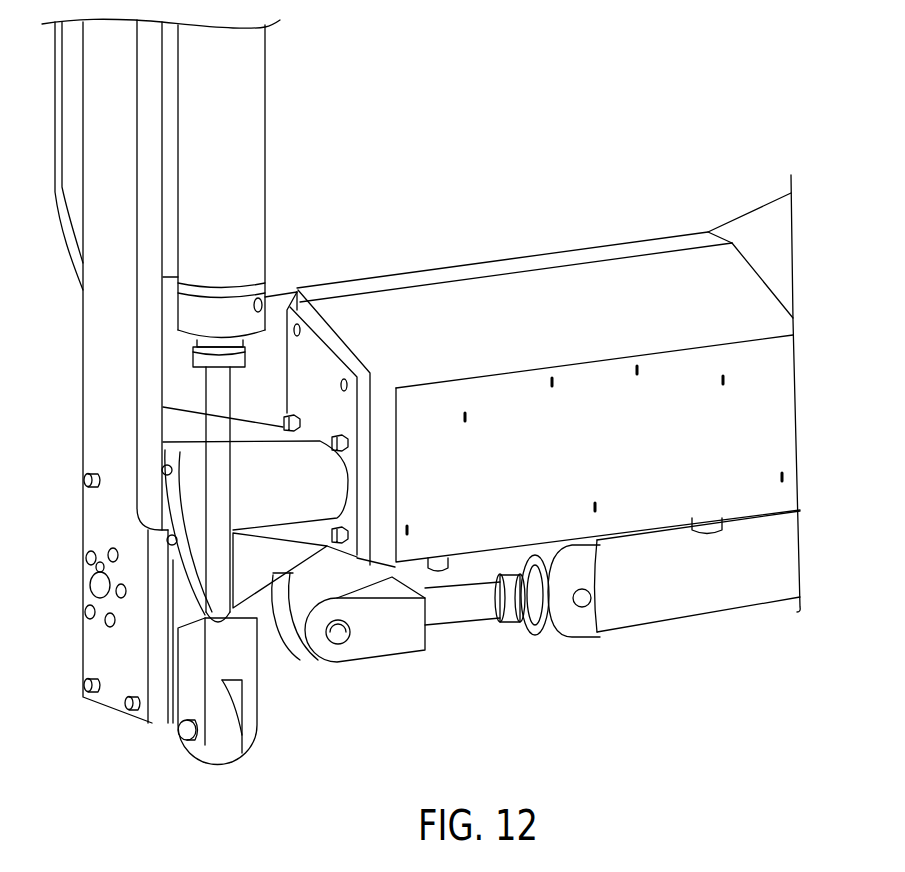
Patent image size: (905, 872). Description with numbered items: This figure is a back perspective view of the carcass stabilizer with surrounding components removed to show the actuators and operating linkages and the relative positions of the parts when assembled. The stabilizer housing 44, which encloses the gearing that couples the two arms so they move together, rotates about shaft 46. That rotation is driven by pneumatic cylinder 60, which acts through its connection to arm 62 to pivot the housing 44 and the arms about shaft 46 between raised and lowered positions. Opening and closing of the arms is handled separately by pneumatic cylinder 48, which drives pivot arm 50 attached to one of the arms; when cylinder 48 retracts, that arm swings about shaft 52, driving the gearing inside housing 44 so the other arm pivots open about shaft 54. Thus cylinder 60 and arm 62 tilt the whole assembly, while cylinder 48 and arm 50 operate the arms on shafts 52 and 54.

The housing 44 is at (544, 346).
The shaft 46 is at (291, 495).
The pneumatic cylinder 48 is at (648, 598).
The pivot arm 50 is at (307, 590).
The shaft 52 is at (80, 207).
The shaft 54 is at (757, 222).
The pneumatic cylinder 60 is at (250, 202).
The arm 62 is at (223, 748).